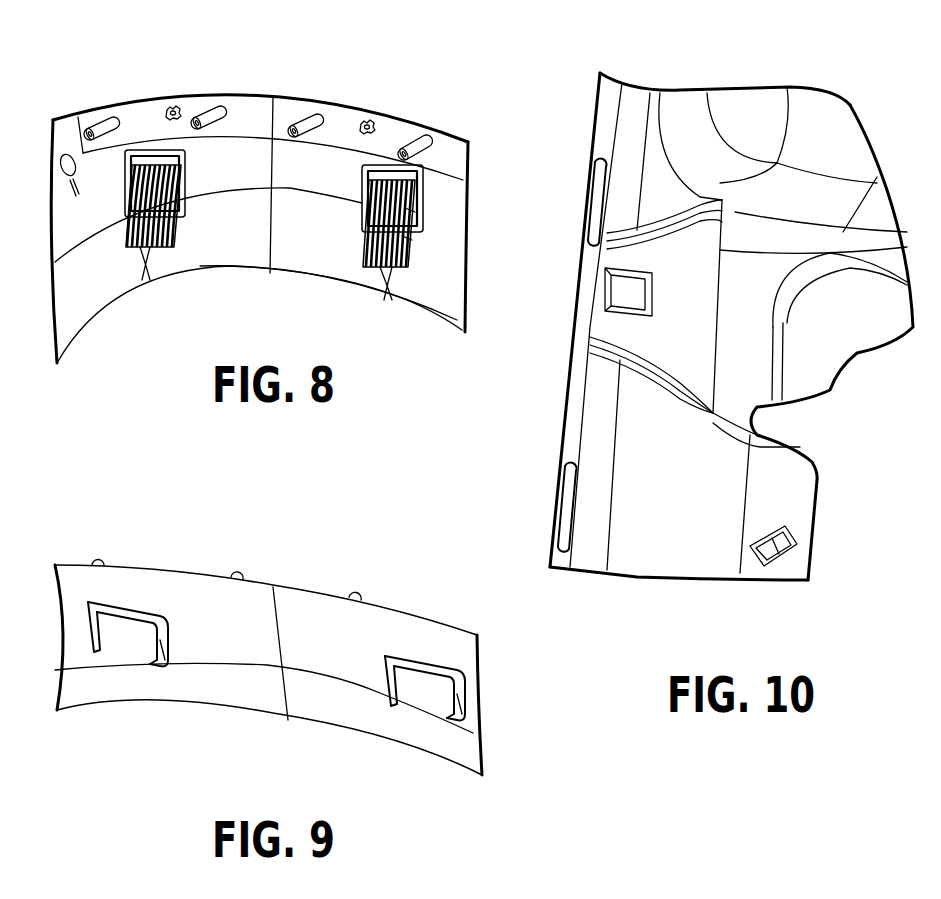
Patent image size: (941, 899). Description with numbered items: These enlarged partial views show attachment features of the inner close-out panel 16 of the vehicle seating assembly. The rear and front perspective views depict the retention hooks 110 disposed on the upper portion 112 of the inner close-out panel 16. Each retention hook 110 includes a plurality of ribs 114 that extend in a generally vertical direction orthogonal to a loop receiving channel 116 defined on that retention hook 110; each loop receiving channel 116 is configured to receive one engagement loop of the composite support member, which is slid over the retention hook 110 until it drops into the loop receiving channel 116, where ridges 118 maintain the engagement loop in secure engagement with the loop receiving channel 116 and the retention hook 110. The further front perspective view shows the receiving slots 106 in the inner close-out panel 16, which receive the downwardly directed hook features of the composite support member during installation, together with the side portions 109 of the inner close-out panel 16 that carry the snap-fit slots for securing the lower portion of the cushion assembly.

In FIG. 10, the inner close-out panel 16 is at (812, 427).
In FIG. 10, the receiving slots 106 is at (603, 302).
In FIG. 10, the side portions 109 is at (588, 447).
In FIG. 8, the retention hooks 110 is at (155, 163).
In FIG. 9, the retention hooks 110 is at (125, 623).
In FIG. 8, the upper portion 112 is at (242, 157).
In FIG. 9, the upper portion 112 is at (303, 617).
In FIG. 8, the ribs 114 is at (140, 250).
In FIG. 8, the loop receiving channel 116 is at (177, 222).
In FIG. 9, the loop receiving channel 116 is at (165, 643).
In FIG. 8, the ridges 118 is at (403, 238).